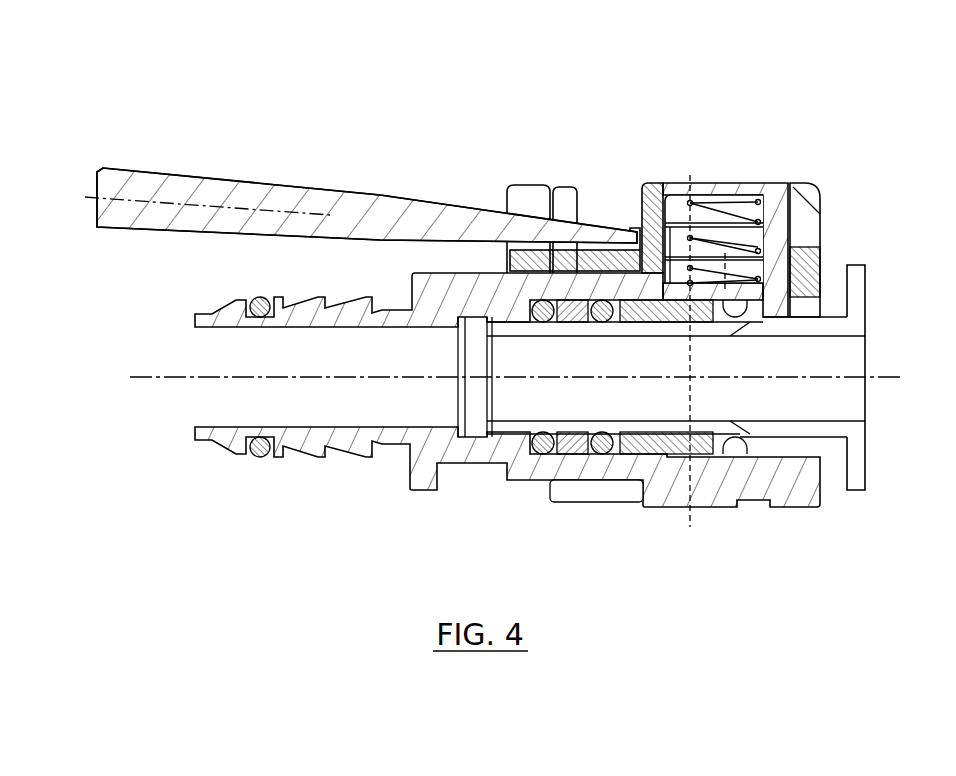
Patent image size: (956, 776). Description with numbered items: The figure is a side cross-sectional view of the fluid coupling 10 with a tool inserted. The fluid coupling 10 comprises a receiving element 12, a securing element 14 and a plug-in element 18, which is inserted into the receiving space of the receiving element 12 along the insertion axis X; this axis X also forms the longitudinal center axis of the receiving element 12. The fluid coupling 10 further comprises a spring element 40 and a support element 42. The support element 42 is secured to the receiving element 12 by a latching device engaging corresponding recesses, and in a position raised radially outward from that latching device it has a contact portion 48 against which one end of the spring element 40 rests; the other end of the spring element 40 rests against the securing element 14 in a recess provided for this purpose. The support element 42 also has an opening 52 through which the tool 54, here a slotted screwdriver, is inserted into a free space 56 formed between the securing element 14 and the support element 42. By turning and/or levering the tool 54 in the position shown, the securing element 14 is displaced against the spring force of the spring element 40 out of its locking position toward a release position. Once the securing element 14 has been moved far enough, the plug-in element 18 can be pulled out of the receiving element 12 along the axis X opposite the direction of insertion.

The fluid coupling 10 is at (468, 107).
The receiving element 12 is at (550, 468).
The securing element 14 is at (630, 185).
The plug-in element 18 is at (857, 280).
The spring element 40 is at (710, 207).
The support element 42 is at (655, 197).
The contact portion 48 is at (733, 185).
The opening 52 is at (537, 207).
The tool 54 is at (322, 195).
The free space 56 is at (632, 226).
The insertion axis X is at (170, 375).